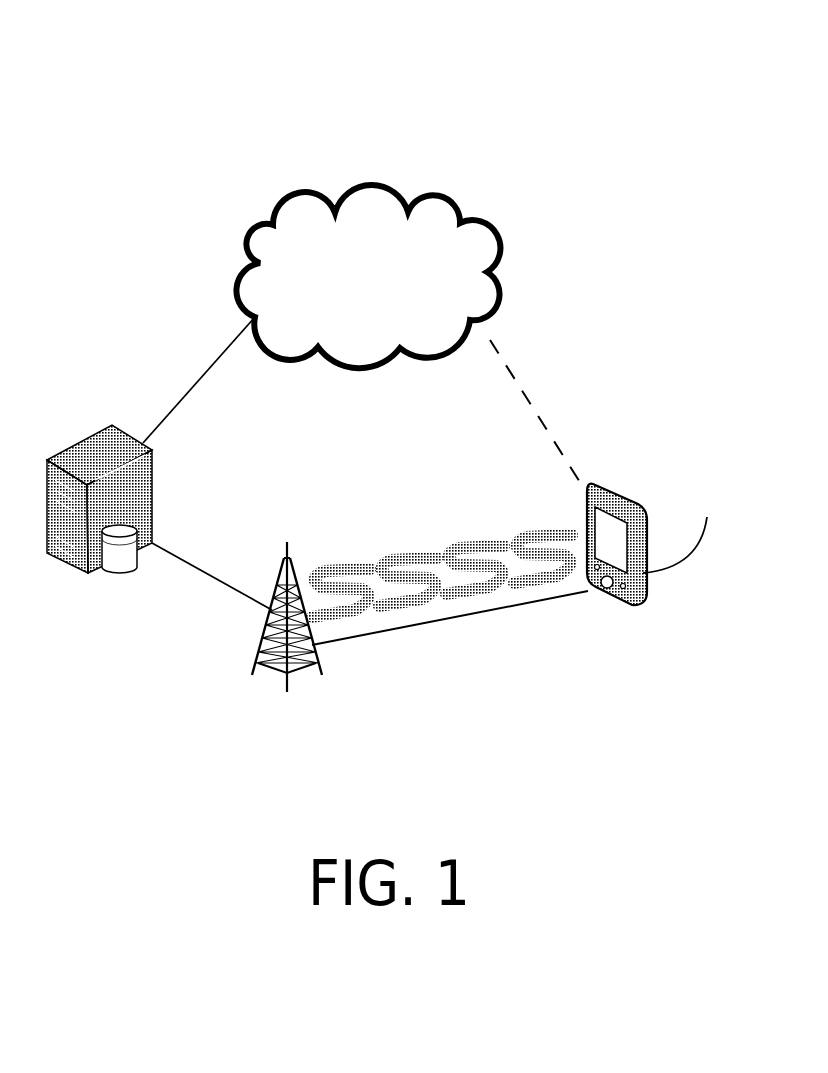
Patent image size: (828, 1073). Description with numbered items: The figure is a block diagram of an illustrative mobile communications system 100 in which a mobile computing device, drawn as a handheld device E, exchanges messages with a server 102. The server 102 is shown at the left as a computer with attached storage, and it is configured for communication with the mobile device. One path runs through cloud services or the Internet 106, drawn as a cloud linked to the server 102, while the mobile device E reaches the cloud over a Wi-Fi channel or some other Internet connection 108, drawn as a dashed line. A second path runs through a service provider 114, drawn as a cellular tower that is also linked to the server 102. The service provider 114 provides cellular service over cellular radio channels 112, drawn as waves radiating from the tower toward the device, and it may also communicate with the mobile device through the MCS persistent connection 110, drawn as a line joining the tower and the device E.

The mobile communications system 100 is at (371, 62).
The server 102 is at (152, 523).
The cloud services or the Internet 106 is at (393, 251).
The Internet connection 108 is at (537, 407).
The MCS persistent connection 110 is at (398, 628).
The cellular radio channels 112 is at (480, 542).
The service provider 114 is at (287, 688).
The mobile device E is at (647, 560).